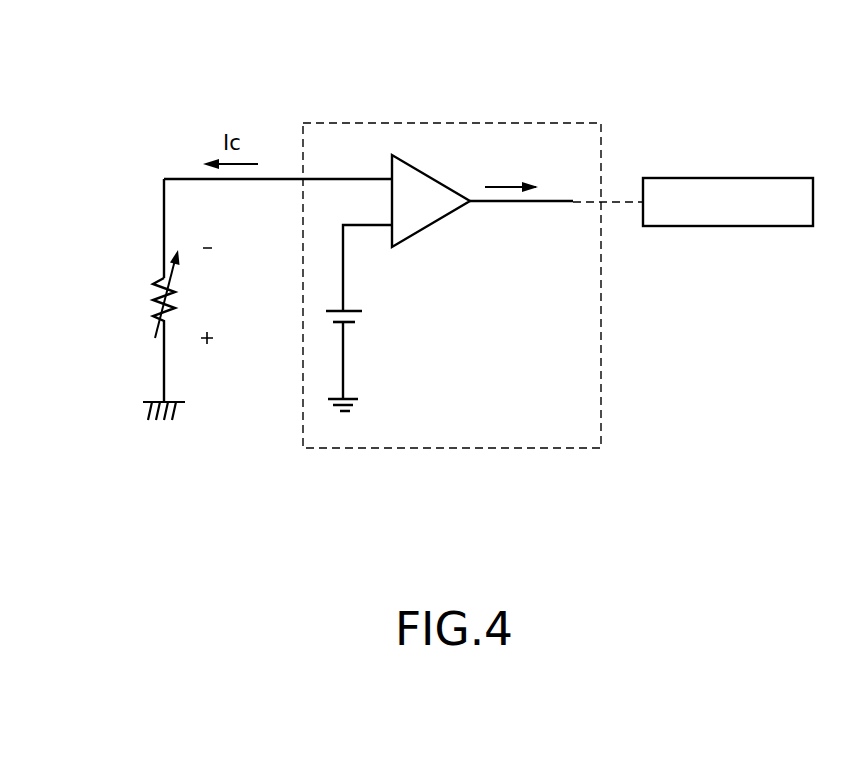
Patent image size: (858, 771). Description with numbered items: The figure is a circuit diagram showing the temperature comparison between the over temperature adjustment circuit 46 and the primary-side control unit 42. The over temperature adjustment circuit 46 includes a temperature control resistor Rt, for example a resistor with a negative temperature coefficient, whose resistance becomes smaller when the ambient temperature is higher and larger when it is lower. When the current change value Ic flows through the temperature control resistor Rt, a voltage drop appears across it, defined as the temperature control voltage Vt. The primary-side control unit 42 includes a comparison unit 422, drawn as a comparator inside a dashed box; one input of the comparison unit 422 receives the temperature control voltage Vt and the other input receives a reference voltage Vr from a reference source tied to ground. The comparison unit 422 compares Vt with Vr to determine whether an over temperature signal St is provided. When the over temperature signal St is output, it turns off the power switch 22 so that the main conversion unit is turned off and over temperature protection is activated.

The power switch 22 is at (790, 188).
The primary-side control unit 42 is at (452, 253).
The comparison unit 422 is at (417, 213).
The over temperature adjustment circuit 46 is at (148, 285).